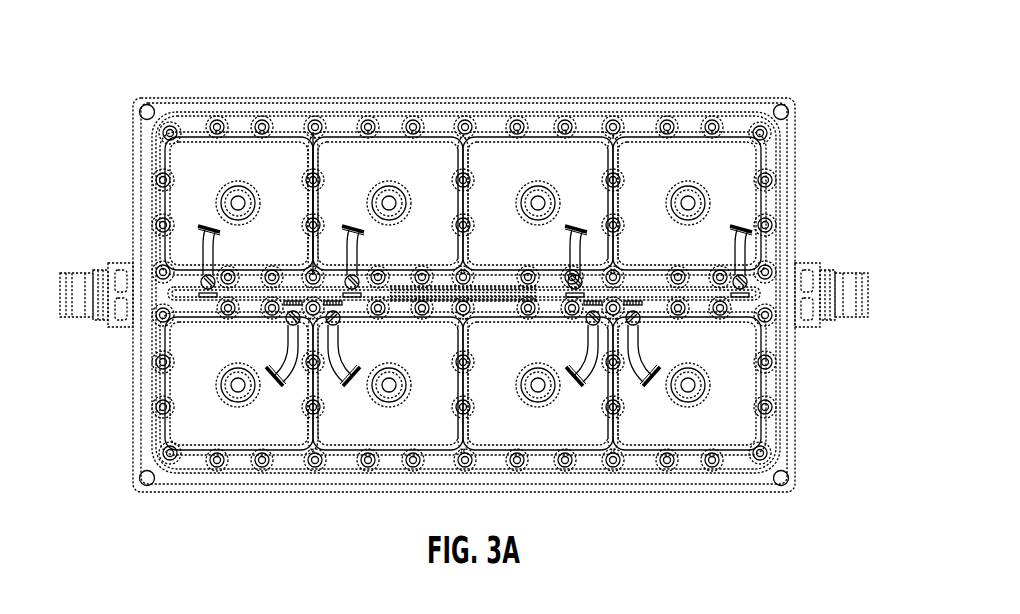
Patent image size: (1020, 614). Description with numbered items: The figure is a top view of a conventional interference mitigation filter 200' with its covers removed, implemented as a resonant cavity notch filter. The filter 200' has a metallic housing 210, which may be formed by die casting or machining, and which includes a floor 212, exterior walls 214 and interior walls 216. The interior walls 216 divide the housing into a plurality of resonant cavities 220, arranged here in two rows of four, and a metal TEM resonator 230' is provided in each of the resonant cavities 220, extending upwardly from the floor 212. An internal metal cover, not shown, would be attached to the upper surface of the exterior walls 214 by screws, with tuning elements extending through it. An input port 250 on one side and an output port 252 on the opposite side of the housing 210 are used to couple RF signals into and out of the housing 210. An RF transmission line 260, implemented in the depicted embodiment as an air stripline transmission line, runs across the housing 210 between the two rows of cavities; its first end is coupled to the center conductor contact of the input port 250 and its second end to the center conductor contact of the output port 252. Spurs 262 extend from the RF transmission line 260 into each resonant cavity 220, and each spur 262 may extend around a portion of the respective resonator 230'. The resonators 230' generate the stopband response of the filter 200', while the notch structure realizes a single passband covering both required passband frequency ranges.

The interference mitigation filter 200' is at (442, 248).
The metallic housing 210 is at (466, 255).
The floor 212 is at (388, 161).
The exterior walls 214 is at (417, 294).
The interior walls 216 is at (290, 159).
The resonant cavities 220 is at (463, 291).
The metal TEM resonators 230' is at (532, 140).
The input port 250 is at (96, 264).
The output port 252 is at (832, 262).
The RF transmission line 260 is at (464, 239).
The spurs 262 is at (393, 261).